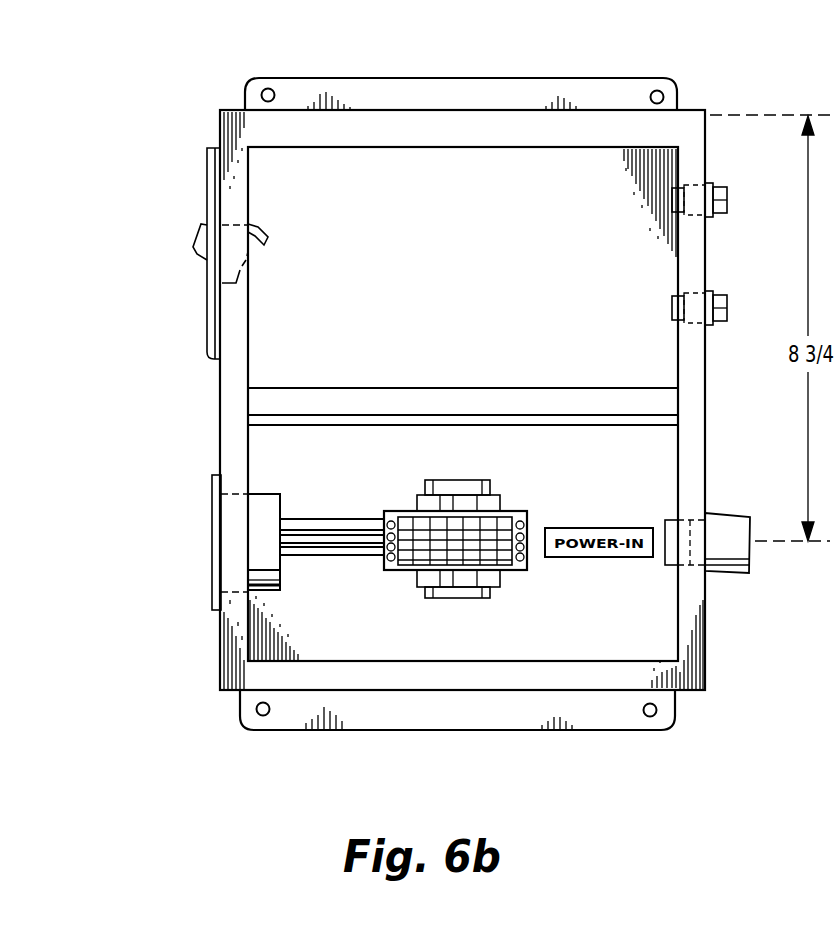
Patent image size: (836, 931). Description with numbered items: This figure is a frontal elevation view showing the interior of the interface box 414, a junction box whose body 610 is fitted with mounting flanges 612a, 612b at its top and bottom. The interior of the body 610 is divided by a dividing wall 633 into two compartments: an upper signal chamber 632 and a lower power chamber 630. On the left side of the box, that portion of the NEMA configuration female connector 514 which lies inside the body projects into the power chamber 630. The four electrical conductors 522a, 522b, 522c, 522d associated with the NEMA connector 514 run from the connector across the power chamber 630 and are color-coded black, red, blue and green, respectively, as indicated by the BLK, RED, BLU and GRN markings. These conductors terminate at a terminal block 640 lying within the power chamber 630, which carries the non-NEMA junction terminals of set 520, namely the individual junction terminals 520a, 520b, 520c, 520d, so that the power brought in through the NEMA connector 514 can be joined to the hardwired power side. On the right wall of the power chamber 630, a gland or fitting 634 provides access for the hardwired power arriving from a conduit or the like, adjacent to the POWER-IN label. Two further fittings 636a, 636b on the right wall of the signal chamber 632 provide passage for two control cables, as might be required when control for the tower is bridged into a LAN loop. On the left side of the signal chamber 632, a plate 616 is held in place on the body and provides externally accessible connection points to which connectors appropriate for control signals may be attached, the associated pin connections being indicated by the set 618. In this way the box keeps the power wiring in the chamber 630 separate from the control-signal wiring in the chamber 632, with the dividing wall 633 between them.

The interface box 414 is at (463, 776).
The NEMA configuration female connector 514 is at (214, 566).
The set of junction terminals 520 is at (513, 600).
The junction terminal 520a is at (527, 522).
The junction terminal 520b is at (527, 536).
The junction terminal 520c is at (527, 548).
The junction terminal 520d is at (527, 560).
The electrical conductor 522a is at (292, 518).
The electrical conductor 522b is at (355, 533).
The electrical conductor 522c is at (303, 558).
The electrical conductor 522d is at (354, 548).
The body of the interface box 610 is at (222, 109).
The mounting flange 612a is at (402, 77).
The mounting flange 612b is at (677, 712).
The plate 616 is at (207, 290).
The set of pins 618 is at (201, 236).
The power chamber 630 is at (476, 467).
The signal chamber 632 is at (421, 192).
The dividing wall 633 is at (412, 387).
The gland or fitting 634 is at (728, 514).
The fitting 636a is at (720, 190).
The fitting 636b is at (720, 298).
The terminal block 640 is at (414, 598).